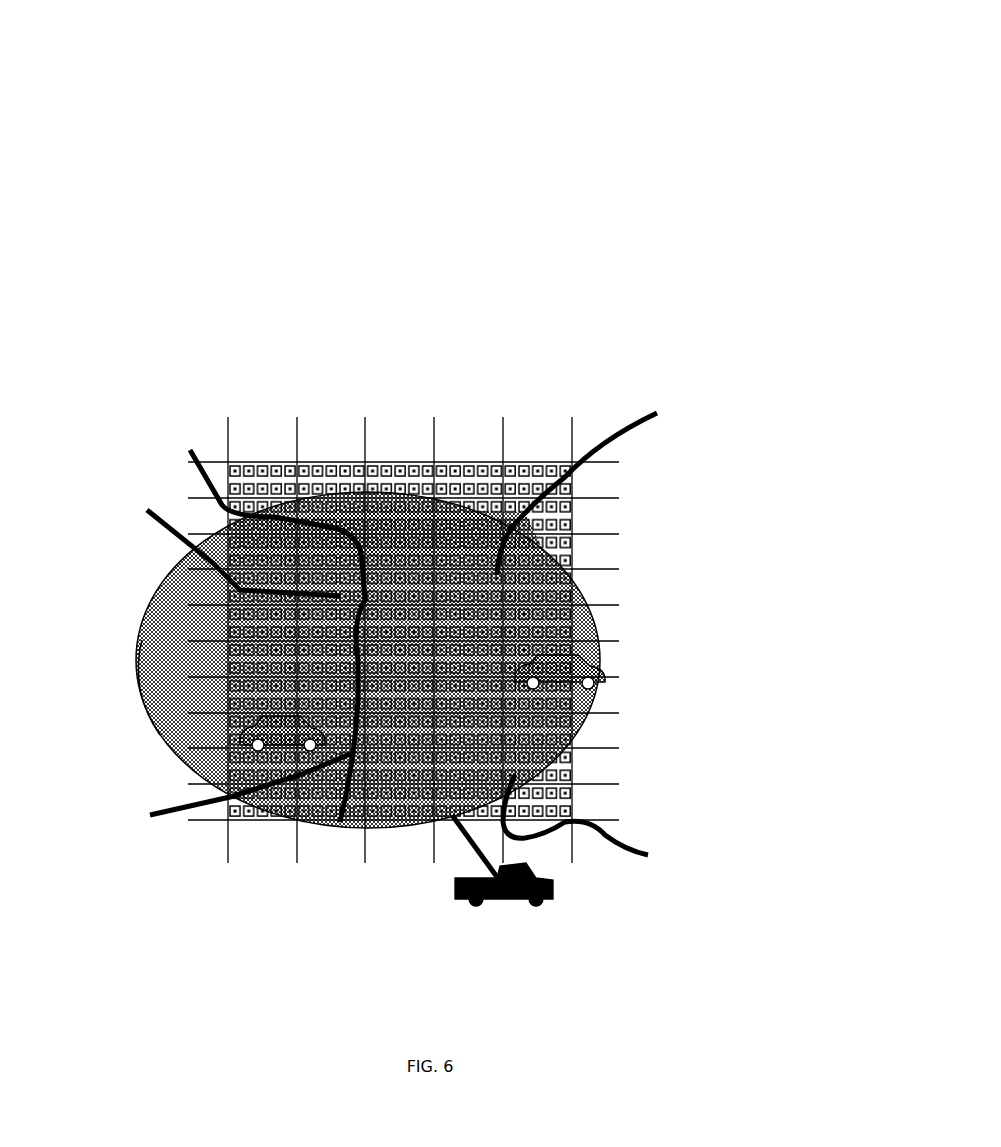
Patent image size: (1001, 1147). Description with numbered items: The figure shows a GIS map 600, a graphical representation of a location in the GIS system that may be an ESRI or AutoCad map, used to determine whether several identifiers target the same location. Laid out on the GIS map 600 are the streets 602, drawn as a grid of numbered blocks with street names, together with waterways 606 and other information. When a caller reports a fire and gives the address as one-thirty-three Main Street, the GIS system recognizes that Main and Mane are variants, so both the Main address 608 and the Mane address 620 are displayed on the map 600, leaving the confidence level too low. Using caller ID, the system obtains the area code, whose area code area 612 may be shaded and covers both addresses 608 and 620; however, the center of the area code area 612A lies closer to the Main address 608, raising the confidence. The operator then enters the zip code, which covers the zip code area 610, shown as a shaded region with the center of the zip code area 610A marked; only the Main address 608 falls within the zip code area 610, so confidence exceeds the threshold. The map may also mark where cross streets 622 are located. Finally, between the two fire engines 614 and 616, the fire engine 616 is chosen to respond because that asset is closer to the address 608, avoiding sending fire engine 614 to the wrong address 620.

The GIS map 600 is at (218, 90).
The streets 602 is at (153, 225).
The waterways 606 is at (190, 450).
The Main address marker 608 is at (147, 510).
The zip code area 610 is at (183, 758).
The center of the zip code area 610A is at (142, 697).
The area code area 612 is at (390, 827).
The center of the area code area 612A is at (337, 828).
The fire engine 614 is at (530, 903).
The fire engine 616 is at (490, 547).
The Mane address marker 620 is at (230, 797).
The cross streets 622 is at (142, 624).